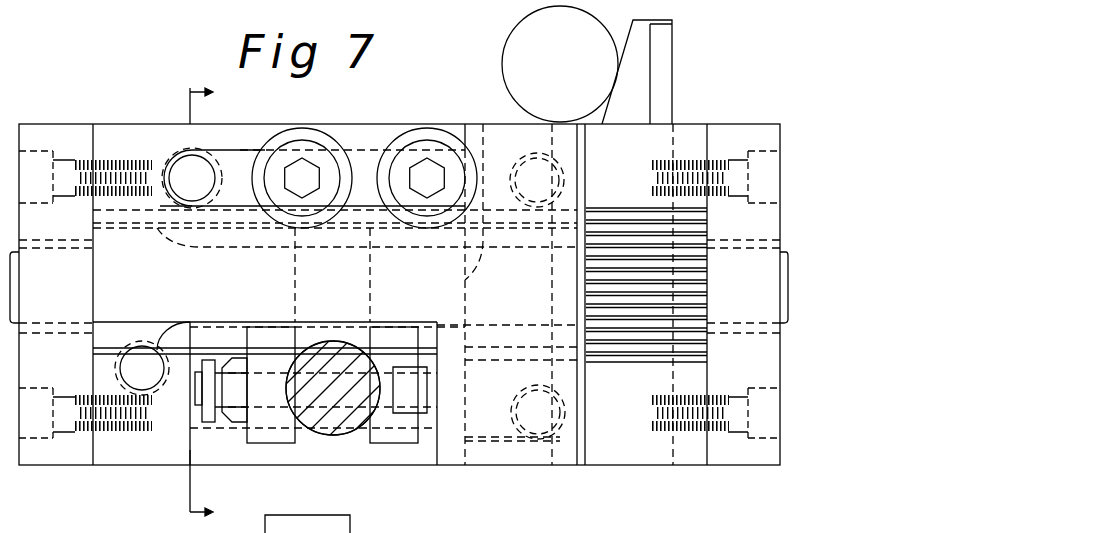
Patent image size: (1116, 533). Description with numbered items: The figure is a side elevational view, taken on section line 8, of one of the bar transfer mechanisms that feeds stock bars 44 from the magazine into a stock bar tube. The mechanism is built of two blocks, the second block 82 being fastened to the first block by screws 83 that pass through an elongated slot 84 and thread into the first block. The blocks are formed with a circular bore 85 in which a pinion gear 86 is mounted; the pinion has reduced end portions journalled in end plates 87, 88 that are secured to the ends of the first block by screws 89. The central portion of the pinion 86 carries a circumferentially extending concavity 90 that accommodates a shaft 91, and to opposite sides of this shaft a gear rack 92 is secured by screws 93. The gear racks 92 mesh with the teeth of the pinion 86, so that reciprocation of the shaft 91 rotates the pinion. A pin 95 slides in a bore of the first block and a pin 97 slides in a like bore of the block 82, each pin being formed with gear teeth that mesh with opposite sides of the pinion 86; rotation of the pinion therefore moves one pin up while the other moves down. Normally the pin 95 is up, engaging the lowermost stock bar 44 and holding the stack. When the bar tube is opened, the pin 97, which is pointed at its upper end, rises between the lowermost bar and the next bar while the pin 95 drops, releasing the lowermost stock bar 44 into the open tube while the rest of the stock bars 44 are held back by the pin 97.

The section line 8- 8 is at (212, 304).
The stock bar 44 is at (507, 42).
The block 82 is at (127, 135).
The screws 83 is at (424, 170).
The elongated slot 84 is at (257, 140).
The circular bore 85 is at (307, 524).
The pinion gear 86 is at (690, 273).
The end plate 87 is at (57, 135).
The end plate 88 is at (745, 130).
The screws 89 is at (722, 434).
The concavity 90 is at (318, 342).
The shaft 91 is at (331, 436).
The gear rack 92 is at (337, 385).
The screws 93 is at (200, 402).
The pin 95 is at (660, 92).
The pin 97 is at (488, 160).